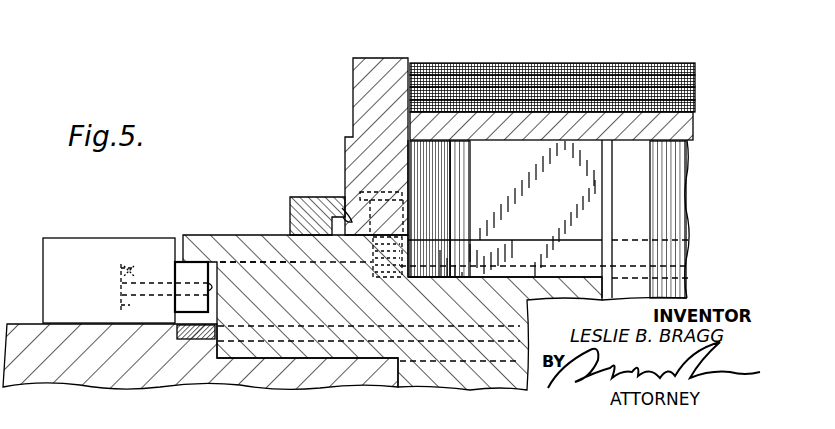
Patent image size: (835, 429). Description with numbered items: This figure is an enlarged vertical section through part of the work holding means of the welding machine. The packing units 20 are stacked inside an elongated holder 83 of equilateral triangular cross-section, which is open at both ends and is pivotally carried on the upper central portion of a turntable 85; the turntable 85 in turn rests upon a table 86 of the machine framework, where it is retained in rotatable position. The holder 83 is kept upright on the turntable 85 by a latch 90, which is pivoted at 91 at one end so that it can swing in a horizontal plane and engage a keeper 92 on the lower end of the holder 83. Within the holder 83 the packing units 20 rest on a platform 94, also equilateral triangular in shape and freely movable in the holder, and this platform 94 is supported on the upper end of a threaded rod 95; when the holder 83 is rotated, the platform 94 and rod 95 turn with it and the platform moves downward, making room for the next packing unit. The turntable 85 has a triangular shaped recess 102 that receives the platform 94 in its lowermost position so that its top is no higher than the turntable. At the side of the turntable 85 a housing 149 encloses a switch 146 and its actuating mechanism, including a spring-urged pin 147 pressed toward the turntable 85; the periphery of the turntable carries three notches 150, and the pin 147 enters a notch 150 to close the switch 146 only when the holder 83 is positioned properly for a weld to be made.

The packing units 20 is at (696, 69).
The holder 83 is at (367, 78).
The turntable 85 is at (232, 288).
The table 86 is at (28, 330).
The latch 90 is at (297, 197).
The pivot 91 is at (375, 196).
The keeper 92 is at (342, 208).
The platform 94 is at (697, 128).
The rod 95 is at (673, 198).
The triangular shaped recess 102 is at (457, 250).
The switch 146 is at (130, 262).
The pin 147 is at (152, 283).
The housing 149 is at (82, 250).
The notches 150 is at (242, 262).